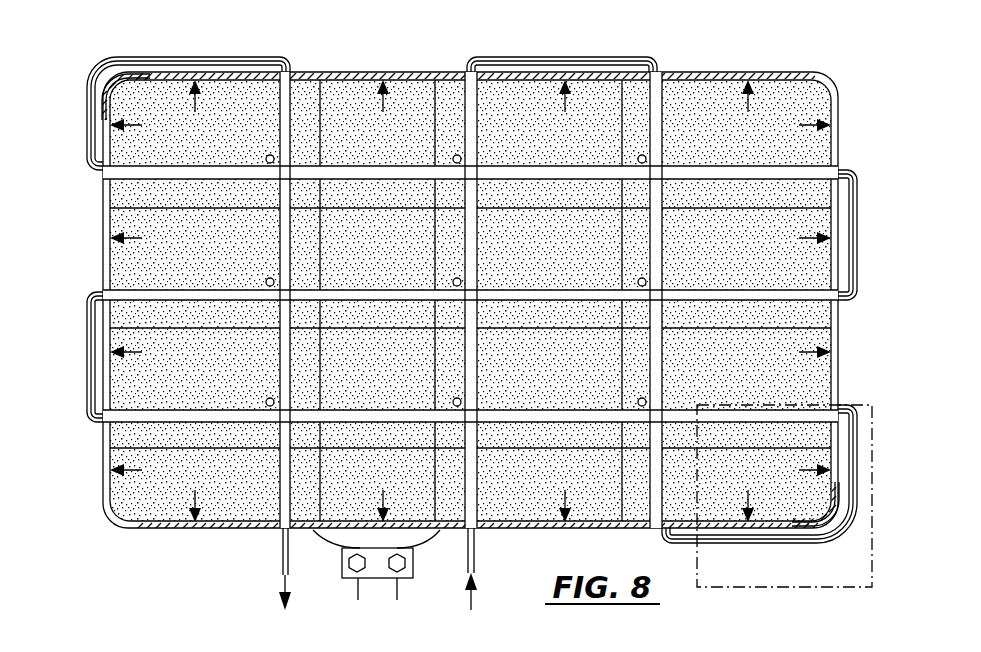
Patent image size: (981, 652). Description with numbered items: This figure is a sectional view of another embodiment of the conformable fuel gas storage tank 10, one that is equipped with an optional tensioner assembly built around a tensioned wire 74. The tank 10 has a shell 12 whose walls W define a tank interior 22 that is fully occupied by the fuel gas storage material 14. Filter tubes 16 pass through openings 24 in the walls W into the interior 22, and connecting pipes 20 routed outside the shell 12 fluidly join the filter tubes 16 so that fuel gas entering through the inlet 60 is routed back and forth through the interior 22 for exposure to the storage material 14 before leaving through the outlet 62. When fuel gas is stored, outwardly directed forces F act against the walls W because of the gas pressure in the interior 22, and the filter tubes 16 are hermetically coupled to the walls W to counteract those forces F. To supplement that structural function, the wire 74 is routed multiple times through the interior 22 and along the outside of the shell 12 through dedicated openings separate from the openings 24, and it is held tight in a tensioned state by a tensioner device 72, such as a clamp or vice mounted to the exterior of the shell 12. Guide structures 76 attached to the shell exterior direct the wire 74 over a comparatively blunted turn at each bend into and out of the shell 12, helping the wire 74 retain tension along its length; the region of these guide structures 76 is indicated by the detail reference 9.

The detail region of FIG. 9 is at (815, 588).
The conformable fuel gas storage tank 10 is at (856, 52).
The shell 12 is at (738, 76).
The fuel gas storage material 14 is at (797, 94).
The filter tubes 16 is at (306, 244).
The connecting pipes 20 is at (176, 50).
The tank interior 22 is at (557, 244).
The openings 24 is at (290, 72).
The inlet 60 is at (476, 554).
The outlet 62 is at (281, 552).
The tensioner device 72 is at (355, 582).
The wire 74 is at (222, 70).
The guide structures 76 is at (106, 78).
The walls W is at (355, 72).
The forces F is at (470, 301).